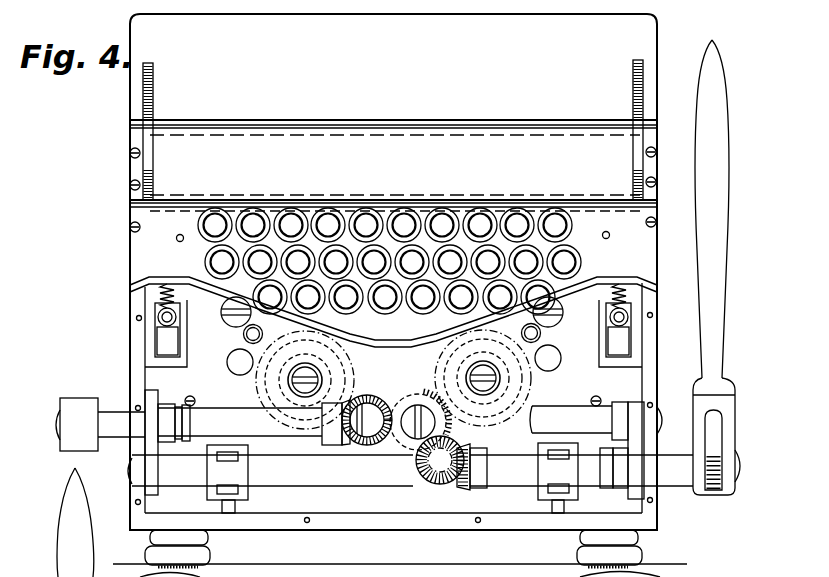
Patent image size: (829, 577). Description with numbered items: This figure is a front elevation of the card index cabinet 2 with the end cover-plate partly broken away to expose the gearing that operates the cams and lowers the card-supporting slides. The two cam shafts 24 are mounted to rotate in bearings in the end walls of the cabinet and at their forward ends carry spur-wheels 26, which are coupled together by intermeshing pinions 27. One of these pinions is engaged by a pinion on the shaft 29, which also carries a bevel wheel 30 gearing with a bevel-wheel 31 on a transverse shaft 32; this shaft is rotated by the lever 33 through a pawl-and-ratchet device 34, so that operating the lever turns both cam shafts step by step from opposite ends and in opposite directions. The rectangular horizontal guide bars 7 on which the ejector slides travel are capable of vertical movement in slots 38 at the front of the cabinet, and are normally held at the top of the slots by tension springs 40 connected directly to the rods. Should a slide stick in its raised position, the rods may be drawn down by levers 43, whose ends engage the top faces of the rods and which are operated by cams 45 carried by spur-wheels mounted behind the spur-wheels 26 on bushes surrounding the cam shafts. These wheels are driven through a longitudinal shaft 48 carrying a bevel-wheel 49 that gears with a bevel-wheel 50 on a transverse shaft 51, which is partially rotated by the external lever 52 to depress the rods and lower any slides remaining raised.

The cabinet 2 is at (661, 384).
The guide bars 7 is at (162, 309).
The cam shaft 24 is at (300, 368).
The spur-wheels 26 is at (252, 392).
The pinions 27 is at (382, 398).
The shaft 29 is at (440, 460).
The bevel wheel 30 is at (449, 484).
The bevel-wheel 31 is at (474, 470).
The transverse shaft 32 is at (418, 466).
The lever 33 is at (712, 222).
The pawl-and-ratchet device 34 is at (712, 492).
The slots 38 is at (160, 342).
The tension springs 40 is at (129, 288).
The levers 43 is at (190, 290).
The cams 45 is at (238, 360).
The longitudinal shaft 48 is at (380, 448).
The bevel-wheel 49 is at (374, 429).
The bevel-wheel 50 is at (348, 413).
The transverse shaft 51 is at (115, 412).
The lever 52 is at (68, 404).